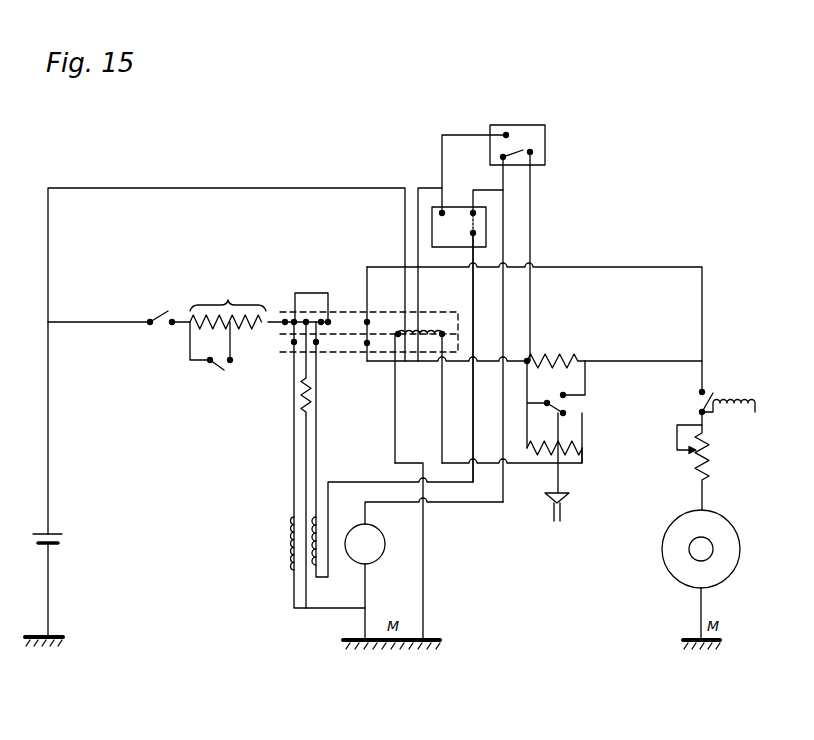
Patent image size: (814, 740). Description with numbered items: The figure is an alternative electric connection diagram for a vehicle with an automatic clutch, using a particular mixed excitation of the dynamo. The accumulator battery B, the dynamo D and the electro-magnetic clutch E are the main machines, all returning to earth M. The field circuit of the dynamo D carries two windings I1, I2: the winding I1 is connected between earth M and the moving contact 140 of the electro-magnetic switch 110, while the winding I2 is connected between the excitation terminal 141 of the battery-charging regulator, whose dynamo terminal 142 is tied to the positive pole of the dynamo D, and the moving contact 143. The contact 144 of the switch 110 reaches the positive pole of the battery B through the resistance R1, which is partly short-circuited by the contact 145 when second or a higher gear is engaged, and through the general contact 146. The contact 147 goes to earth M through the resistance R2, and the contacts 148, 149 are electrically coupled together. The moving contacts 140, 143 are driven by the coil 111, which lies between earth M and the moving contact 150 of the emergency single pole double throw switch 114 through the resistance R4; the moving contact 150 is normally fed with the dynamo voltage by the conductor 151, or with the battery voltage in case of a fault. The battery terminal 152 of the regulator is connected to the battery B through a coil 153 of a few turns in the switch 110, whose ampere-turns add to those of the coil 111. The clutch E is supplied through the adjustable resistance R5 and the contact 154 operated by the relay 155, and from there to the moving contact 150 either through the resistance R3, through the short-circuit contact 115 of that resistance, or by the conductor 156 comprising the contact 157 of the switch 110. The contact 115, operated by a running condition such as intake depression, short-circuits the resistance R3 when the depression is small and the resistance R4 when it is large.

The general contact 146 is at (165, 311).
The contact 145 is at (219, 369).
The contact 144 is at (283, 326).
The contact 148 is at (293, 319).
The contact 147 is at (308, 318).
The contact 149 is at (331, 319).
The moving contact 140 is at (292, 338).
The moving contact 143 is at (322, 344).
The electro-magnetic switch 110 is at (354, 356).
The contact 157 is at (369, 339).
The coil 111 is at (437, 328).
The coil 153 is at (399, 344).
The conductor 156 is at (619, 267).
The battery terminal 152 is at (442, 205).
The dynamo terminal 142 is at (470, 216).
The excitation terminal 141 is at (470, 237).
The emergency single pole double throw switch 114 is at (546, 143).
The moving contact 150 is at (516, 150).
The conductor 151 is at (502, 177).
The short-circuit contact 115 is at (546, 404).
The contact 154 is at (697, 404).
The relay 155 is at (758, 399).
The resistance R1 is at (228, 304).
The resistance R2 is at (310, 413).
The resistance R3 is at (550, 360).
The resistance R4 is at (553, 443).
The adjustable resistance R5 is at (709, 463).
The accumulator battery B is at (55, 541).
The dynamo D is at (424, 569).
The electro-magnetic clutch E is at (740, 548).
The field winding I1 is at (289, 531).
The field winding I2 is at (311, 556).
The earth M is at (46, 632).